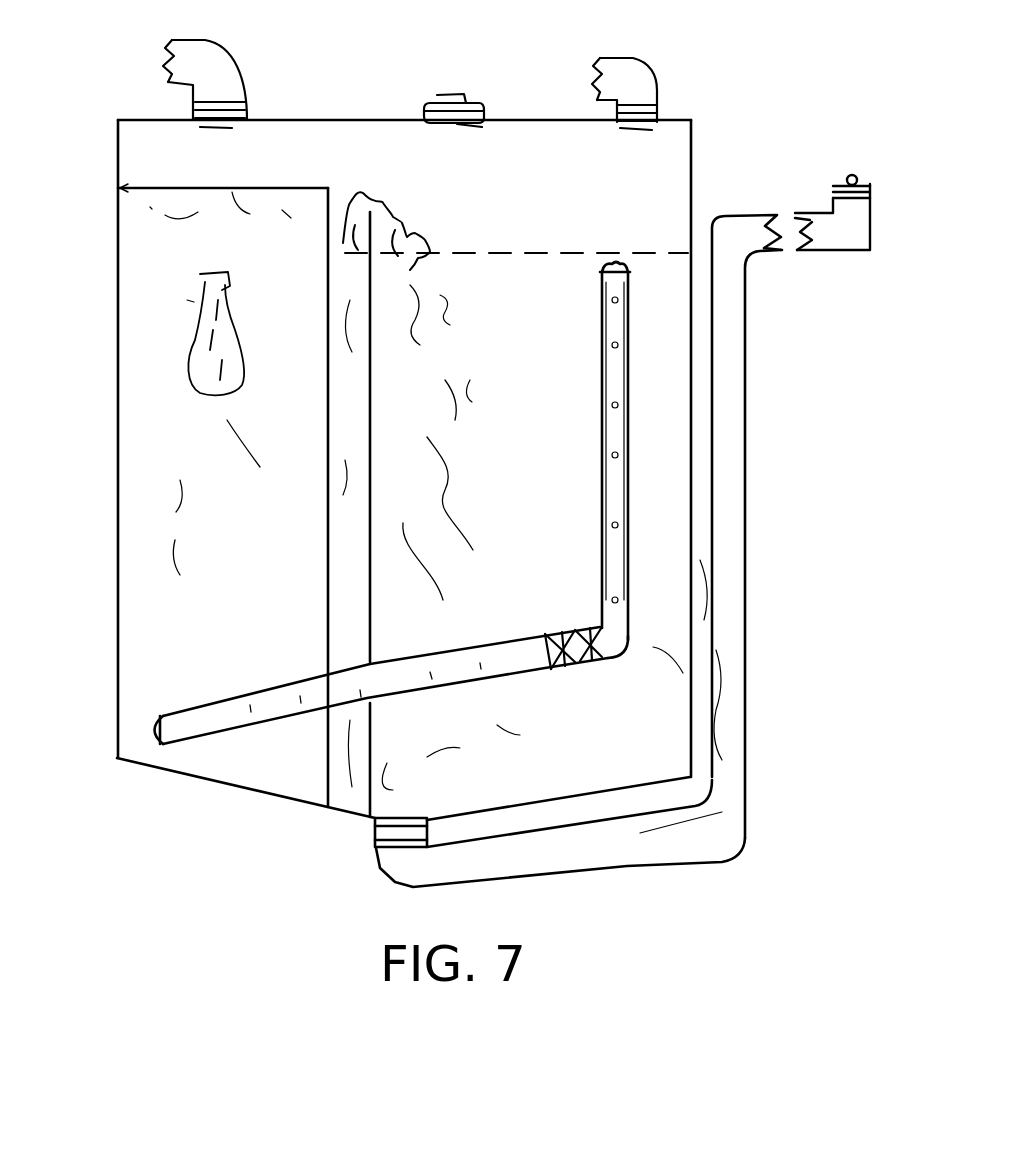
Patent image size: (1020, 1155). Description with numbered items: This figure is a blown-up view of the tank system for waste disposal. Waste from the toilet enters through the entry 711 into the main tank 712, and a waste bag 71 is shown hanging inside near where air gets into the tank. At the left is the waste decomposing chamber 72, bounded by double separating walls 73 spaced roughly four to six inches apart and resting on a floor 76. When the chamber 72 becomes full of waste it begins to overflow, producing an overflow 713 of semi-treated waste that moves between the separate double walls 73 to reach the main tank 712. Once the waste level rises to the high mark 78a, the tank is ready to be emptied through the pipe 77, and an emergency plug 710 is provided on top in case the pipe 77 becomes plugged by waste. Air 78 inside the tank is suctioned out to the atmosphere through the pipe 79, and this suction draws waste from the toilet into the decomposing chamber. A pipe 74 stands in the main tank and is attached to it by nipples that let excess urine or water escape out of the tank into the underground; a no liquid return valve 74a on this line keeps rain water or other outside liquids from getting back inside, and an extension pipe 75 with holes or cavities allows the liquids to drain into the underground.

The waste bag 71 is at (170, 361).
The waste decomposing chamber 72 is at (222, 455).
The double separating walls 73 is at (320, 518).
The pipe 74 is at (600, 598).
The no liquid return valve 74a is at (528, 632).
The extension pipe 75 is at (245, 695).
The floor 76 is at (250, 788).
The pipe 77 is at (853, 212).
The air 78 is at (643, 185).
The high mark 78a is at (605, 240).
The pipe 79 is at (646, 94).
The emergency plug 710 is at (454, 92).
The entry 711 is at (208, 73).
The main tank 712 is at (500, 338).
The overflow 713 is at (337, 223).